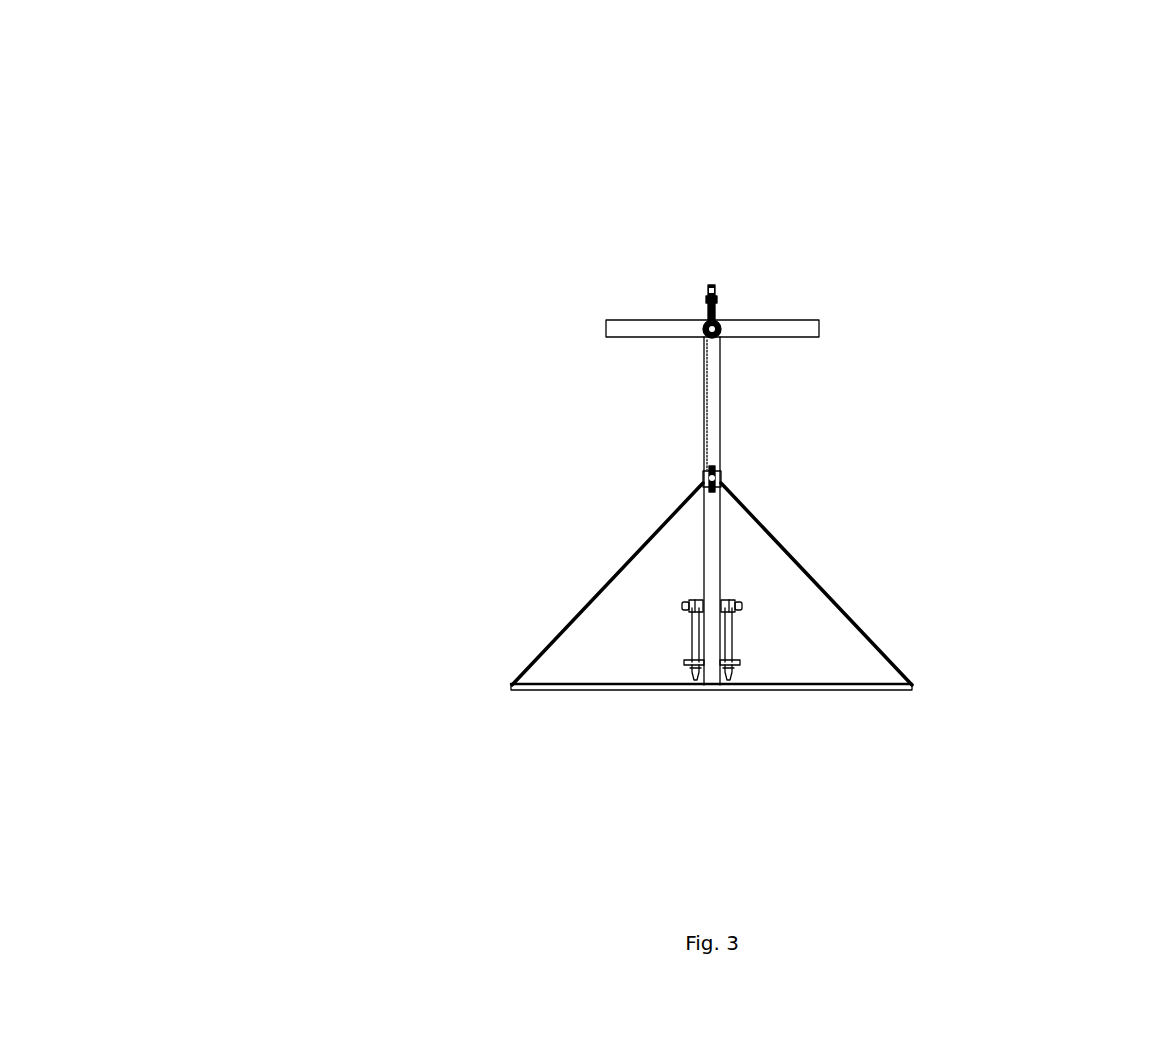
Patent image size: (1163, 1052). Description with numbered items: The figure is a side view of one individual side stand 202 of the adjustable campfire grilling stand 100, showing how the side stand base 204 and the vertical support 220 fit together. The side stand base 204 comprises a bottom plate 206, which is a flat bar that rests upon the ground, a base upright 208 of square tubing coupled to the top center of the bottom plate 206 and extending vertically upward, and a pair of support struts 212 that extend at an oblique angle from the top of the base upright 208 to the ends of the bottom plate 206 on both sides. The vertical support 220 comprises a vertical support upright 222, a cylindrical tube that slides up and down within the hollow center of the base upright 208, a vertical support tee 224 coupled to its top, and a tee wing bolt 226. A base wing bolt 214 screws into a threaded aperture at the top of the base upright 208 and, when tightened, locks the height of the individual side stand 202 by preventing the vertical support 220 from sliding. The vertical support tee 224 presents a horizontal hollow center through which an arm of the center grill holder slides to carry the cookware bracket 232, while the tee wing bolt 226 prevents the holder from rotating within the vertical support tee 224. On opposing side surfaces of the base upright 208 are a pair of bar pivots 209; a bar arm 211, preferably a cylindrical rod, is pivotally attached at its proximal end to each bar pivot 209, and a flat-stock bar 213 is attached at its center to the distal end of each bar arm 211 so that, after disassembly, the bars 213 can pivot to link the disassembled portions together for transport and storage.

The adjustable campfire grilling stand 100 is at (172, 198).
The individual side stand 202 is at (507, 792).
The side stand base 204 is at (1080, 430).
The bottom plate 206 is at (592, 688).
The base upright 208 is at (720, 533).
The bar pivot 209 is at (682, 605).
The bar arm 211 is at (693, 640).
The support struts 212 is at (550, 643).
The bar 213 is at (692, 670).
The base wing bolt 214 is at (716, 441).
The vertical support 220 is at (732, 262).
The vertical support upright 222 is at (709, 395).
The vertical support tee 224 is at (702, 337).
The tee wing bolt 226 is at (718, 296).
The cookware bracket 232 is at (818, 328).